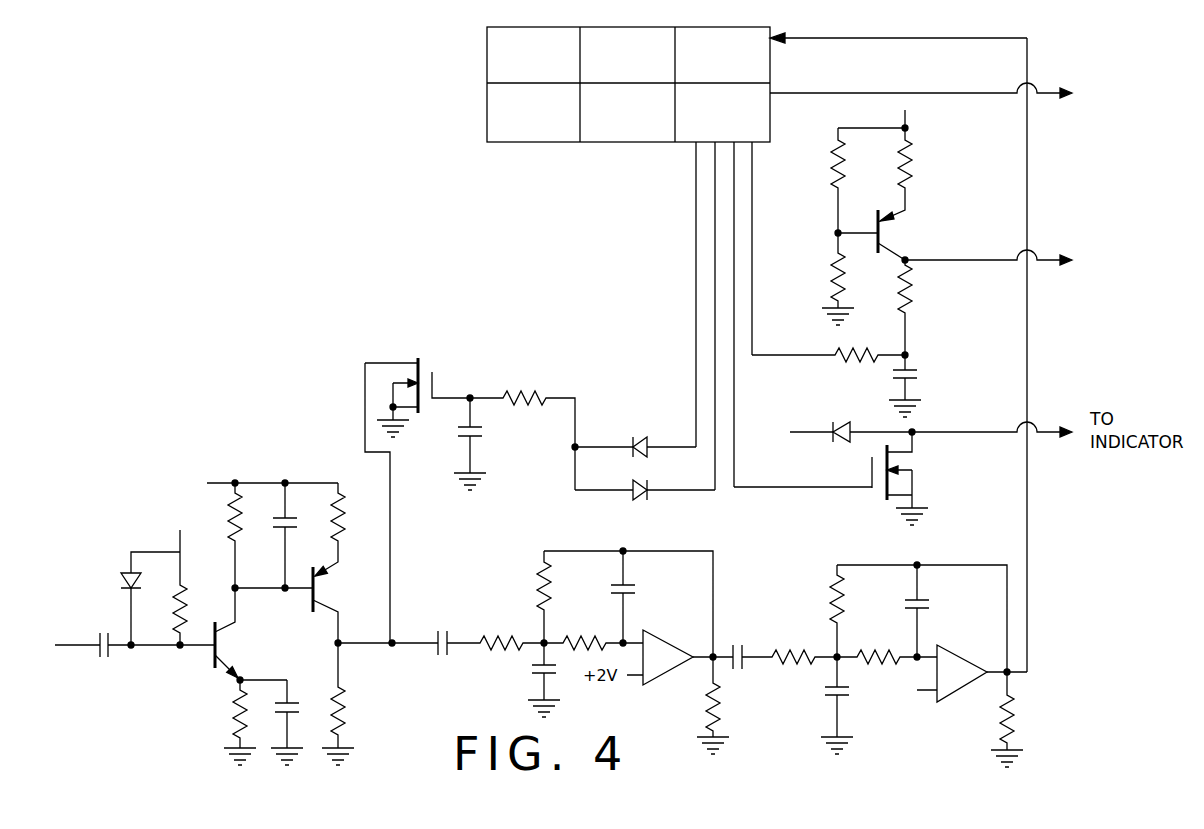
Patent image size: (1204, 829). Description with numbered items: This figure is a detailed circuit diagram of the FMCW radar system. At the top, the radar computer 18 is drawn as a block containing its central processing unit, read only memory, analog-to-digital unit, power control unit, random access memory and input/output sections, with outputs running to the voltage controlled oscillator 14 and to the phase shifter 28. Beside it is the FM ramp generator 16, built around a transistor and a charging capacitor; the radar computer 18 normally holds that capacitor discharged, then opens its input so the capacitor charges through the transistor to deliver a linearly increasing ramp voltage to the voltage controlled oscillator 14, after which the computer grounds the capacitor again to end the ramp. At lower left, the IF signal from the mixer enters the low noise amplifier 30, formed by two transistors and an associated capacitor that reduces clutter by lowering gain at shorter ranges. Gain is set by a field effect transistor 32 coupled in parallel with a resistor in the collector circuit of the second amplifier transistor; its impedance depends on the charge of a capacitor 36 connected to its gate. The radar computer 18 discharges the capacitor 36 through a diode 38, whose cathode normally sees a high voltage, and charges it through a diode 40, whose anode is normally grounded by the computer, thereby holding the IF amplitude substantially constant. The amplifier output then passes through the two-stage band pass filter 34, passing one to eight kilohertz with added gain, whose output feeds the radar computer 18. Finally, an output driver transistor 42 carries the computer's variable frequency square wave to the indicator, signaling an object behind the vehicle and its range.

The radar computer 18 is at (497, 57).
The FM ramp generator 16 is at (925, 171).
The phase shifter 28 is at (969, 102).
The voltage controlled oscillator 14 is at (1041, 259).
The low noise amplifier 30 is at (182, 500).
The field effect transistor 32 is at (436, 390).
The band pass filter 34 is at (758, 580).
The capacitor 36 is at (478, 437).
The diode 38 is at (640, 500).
The diode 40 is at (642, 437).
The output driver transistor 42 is at (890, 460).